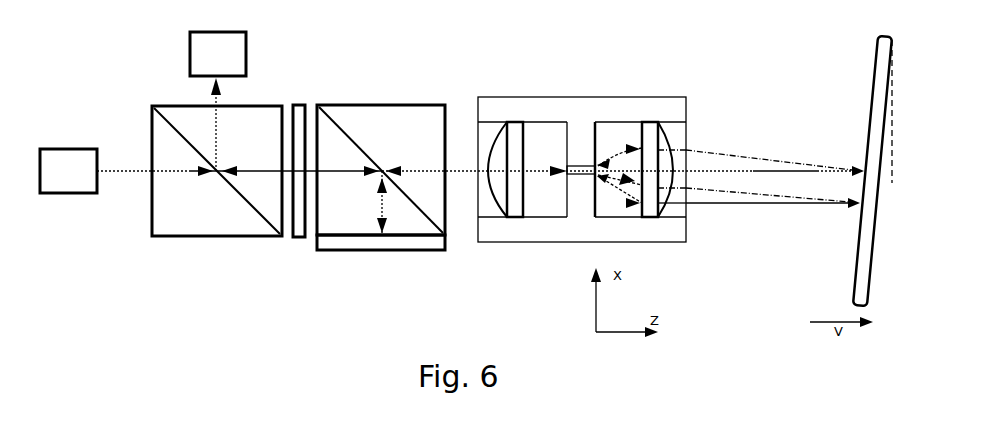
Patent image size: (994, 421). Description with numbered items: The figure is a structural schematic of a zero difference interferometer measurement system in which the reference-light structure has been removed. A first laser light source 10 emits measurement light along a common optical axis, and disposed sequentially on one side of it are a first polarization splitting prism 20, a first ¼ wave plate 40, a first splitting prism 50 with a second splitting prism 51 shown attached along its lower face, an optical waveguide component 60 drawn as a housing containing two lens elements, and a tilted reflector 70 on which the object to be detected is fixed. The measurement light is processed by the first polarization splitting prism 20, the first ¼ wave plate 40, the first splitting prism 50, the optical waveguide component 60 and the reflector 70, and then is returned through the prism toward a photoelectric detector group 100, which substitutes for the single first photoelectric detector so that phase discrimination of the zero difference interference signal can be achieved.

The first laser light source 10 is at (70, 149).
The photoelectric detector group 100 is at (218, 32).
The first polarization splitting prism 20 is at (152, 208).
The first ¼ wave plate 40 is at (299, 105).
The first splitting prism 50 is at (380, 105).
The second splitting prism 51 is at (380, 250).
The optical waveguide component 60 is at (581, 97).
The reflector 70 is at (873, 75).